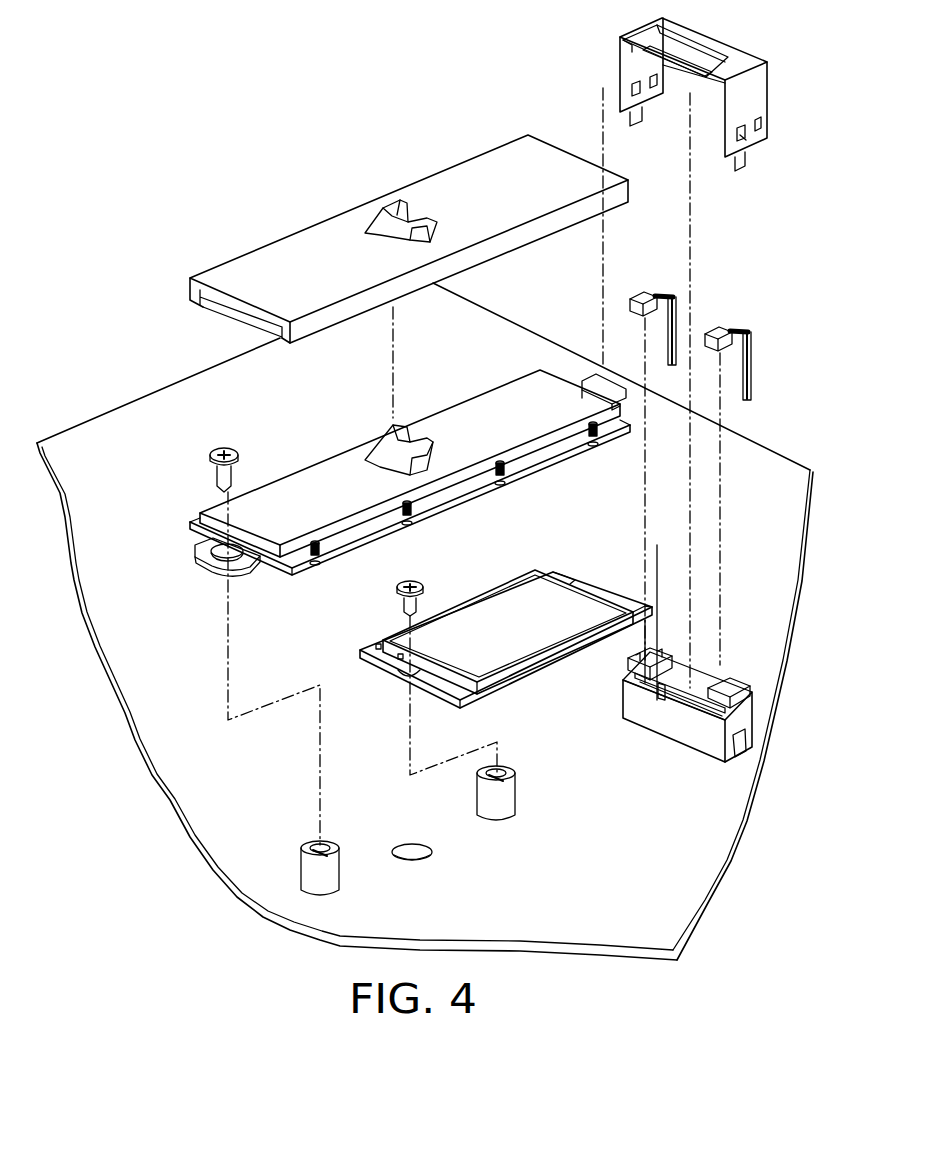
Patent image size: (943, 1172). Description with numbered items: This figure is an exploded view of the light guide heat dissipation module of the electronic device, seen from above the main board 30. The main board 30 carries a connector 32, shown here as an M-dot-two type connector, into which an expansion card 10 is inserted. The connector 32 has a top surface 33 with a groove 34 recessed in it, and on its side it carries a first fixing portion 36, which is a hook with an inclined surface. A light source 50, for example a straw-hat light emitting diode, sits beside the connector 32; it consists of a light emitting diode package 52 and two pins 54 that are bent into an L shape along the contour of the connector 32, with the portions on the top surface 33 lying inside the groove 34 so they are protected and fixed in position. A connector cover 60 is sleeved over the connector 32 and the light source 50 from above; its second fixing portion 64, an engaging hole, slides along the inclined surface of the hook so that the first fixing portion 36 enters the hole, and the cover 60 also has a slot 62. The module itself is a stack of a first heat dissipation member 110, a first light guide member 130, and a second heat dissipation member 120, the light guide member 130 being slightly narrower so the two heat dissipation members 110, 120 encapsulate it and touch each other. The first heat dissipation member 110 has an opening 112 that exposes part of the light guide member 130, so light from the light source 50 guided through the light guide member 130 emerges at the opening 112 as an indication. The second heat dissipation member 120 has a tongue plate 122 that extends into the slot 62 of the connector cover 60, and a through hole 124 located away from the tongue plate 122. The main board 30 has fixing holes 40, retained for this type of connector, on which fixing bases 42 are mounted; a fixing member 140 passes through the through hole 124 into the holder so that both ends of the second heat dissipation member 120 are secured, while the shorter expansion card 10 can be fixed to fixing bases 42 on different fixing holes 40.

The expansion card 10 is at (557, 657).
The main board 30 is at (690, 948).
The connector 32 is at (726, 683).
The top surface 33 is at (740, 686).
The groove 34 is at (737, 684).
The first fixing portion 36 is at (740, 748).
The fixing holes 40 is at (381, 839).
The fixing bases 42 is at (340, 897).
The light source 50 is at (714, 444).
The light emitting diode package 52 is at (722, 325).
The pins 54 is at (755, 352).
The connector cover 60 is at (698, 353).
The slot 62 is at (655, 50).
The second fixing portion 64 is at (740, 135).
The first heat dissipation member 110 is at (213, 258).
The opening 112 is at (385, 217).
The second heat dissipation member 120 is at (292, 572).
The tongue plate 122 is at (588, 375).
The through hole 124 is at (221, 553).
The first light guide member 130 is at (290, 492).
The fixing member 140 is at (213, 462).